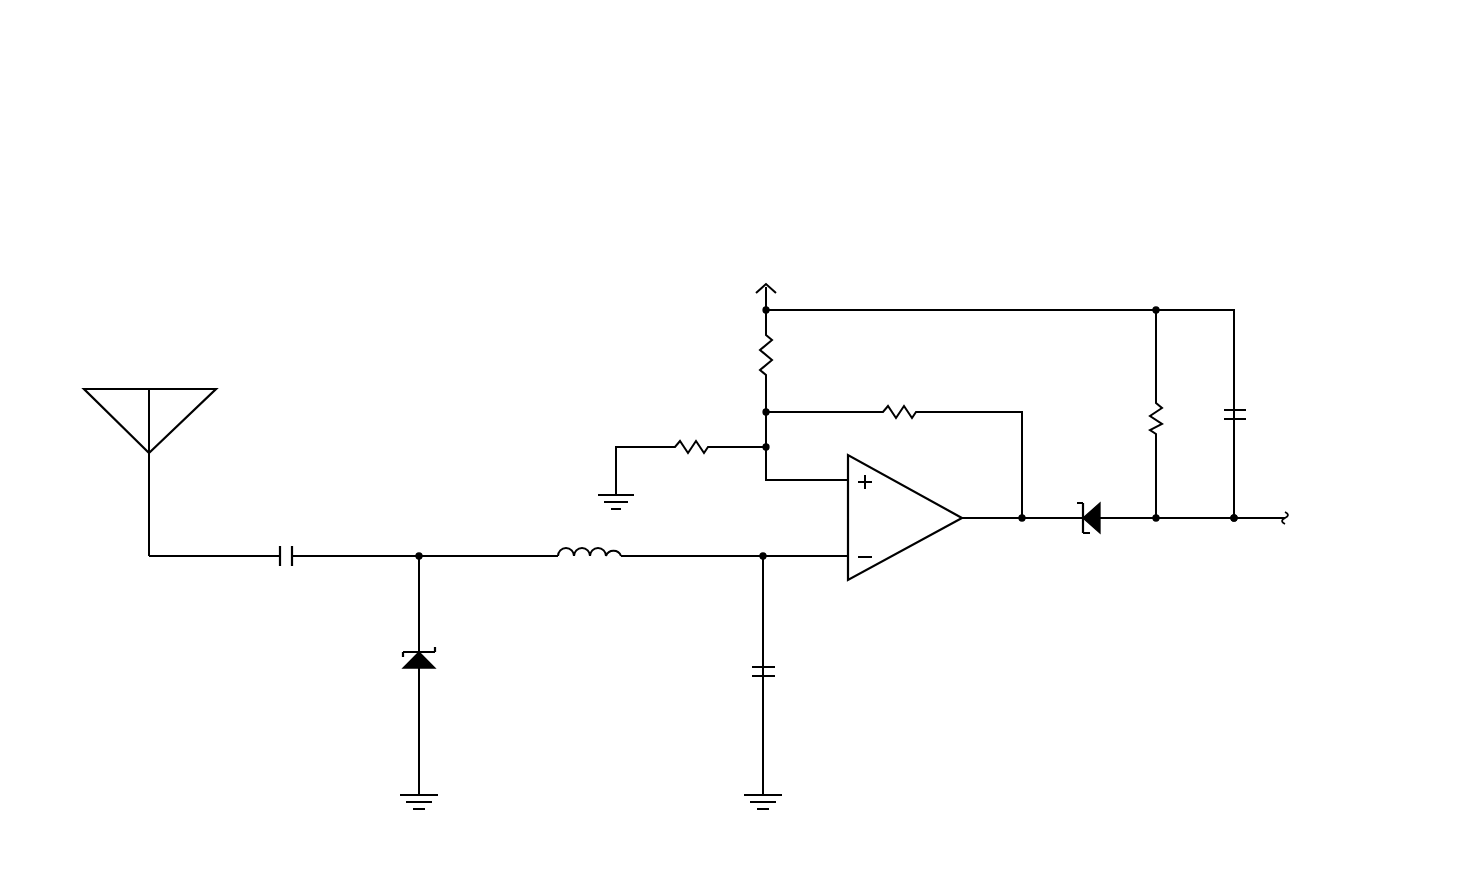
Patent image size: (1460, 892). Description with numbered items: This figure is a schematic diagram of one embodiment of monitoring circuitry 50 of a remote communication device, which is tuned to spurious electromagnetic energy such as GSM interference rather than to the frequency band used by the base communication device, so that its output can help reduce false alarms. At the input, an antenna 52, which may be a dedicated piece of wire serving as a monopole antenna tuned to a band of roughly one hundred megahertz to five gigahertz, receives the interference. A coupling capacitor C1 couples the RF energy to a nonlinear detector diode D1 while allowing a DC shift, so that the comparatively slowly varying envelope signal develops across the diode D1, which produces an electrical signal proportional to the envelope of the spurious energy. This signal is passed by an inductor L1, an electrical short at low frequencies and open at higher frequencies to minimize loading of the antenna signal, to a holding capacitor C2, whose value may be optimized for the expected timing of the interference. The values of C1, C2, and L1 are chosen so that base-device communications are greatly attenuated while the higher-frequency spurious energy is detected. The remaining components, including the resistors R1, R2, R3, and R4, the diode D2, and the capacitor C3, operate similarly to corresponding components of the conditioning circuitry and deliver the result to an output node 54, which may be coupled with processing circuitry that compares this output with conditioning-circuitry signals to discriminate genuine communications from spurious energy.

The monitoring circuitry 50 is at (233, 157).
The antenna 52 is at (130, 403).
The output node 54 is at (1233, 524).
The coupling capacitor C1 is at (296, 517).
The nonlinear detector diode D1 is at (441, 682).
The inductor L1 is at (589, 591).
The holding capacitor C2 is at (803, 682).
The resistor R1 is at (682, 458).
The resistor R2 is at (791, 378).
The resistor R3 is at (894, 446).
The resistor R4 is at (1133, 414).
The diode D2 is at (1092, 501).
The capacitor C3 is at (1299, 397).